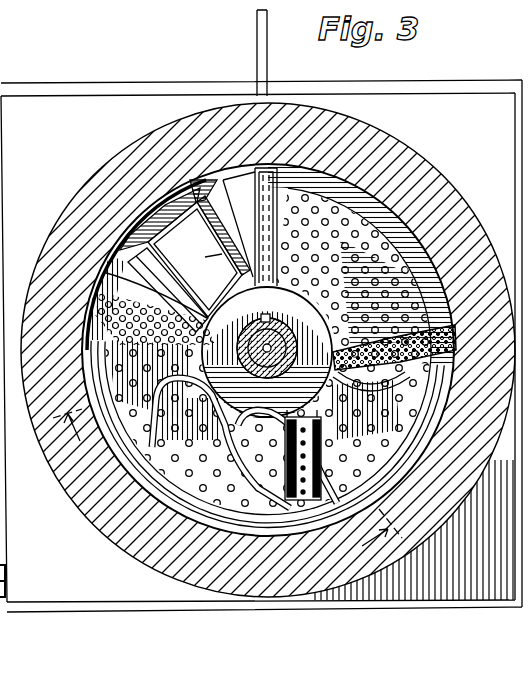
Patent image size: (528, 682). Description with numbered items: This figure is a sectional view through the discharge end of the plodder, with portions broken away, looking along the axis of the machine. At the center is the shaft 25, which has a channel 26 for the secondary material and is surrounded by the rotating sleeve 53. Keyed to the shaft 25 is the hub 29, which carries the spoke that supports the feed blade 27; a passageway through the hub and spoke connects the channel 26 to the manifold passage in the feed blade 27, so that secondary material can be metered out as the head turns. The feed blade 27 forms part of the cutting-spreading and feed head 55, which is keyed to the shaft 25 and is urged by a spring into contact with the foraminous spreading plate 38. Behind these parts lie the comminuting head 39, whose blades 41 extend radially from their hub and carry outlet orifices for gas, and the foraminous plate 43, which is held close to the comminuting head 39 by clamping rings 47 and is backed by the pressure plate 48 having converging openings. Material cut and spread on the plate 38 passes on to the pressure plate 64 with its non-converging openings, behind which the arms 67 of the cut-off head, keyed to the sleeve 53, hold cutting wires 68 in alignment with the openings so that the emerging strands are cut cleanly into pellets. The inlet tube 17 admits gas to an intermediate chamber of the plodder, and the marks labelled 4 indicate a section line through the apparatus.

The inlet tube 17 is at (257, 52).
The cutting wire 68 is at (322, 163).
The arm 67 is at (317, 180).
The pressure plate 64 is at (280, 176).
The clamping rings 47 is at (223, 192).
The comminuting head 39 is at (166, 226).
The blades 41 is at (195, 259).
The foraminous plate 43 is at (168, 290).
The rotating sleeve 53 is at (262, 317).
The shaft 25 is at (246, 342).
The channel 26 is at (248, 355).
The hub 29 is at (306, 353).
The foraminous spreading plate 38 is at (395, 349).
The section line 4 is at (234, 467).
The pressure plate 48 is at (165, 465).
The cutting-spreading and feed head 55 is at (227, 481).
The feed blade 27 is at (336, 502).